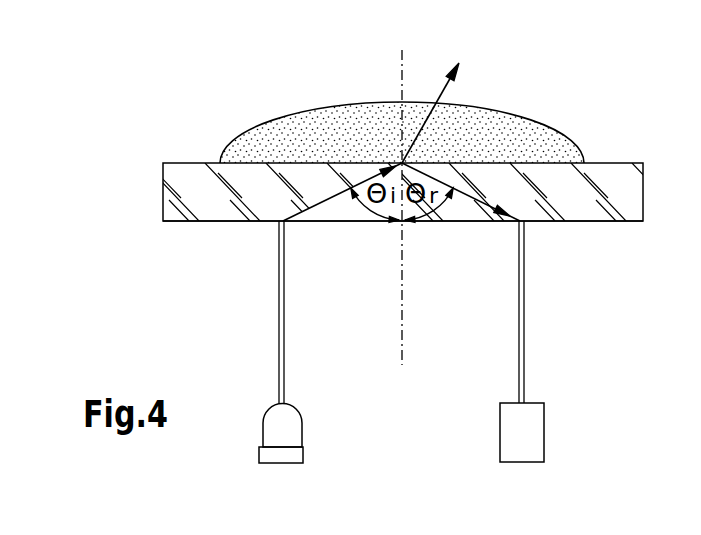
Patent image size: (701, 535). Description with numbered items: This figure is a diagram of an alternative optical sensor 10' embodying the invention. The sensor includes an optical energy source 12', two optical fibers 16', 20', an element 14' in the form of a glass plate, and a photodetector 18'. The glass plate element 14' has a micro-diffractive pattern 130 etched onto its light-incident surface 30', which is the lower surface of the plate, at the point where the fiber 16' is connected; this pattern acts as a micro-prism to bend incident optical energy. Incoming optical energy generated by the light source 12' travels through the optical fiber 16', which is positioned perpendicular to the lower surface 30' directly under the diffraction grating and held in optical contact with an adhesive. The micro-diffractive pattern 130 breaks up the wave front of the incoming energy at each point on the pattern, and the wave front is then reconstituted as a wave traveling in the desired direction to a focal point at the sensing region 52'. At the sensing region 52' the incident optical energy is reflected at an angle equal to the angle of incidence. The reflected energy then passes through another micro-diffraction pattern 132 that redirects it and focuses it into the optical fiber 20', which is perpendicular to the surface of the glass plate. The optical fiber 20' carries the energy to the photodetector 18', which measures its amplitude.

The optical sensor 10' is at (598, 80).
The element 14' is at (415, 172).
The sensing region 52' is at (402, 113).
The light-incident surface 30' is at (403, 236).
The micro-diffractive pattern 130 is at (287, 222).
The micro-diffraction pattern 132 is at (523, 222).
The optical fiber 16' is at (256, 312).
The optical fiber 20' is at (547, 312).
The optical energy source 12' is at (260, 434).
The photodetector 18' is at (556, 432).